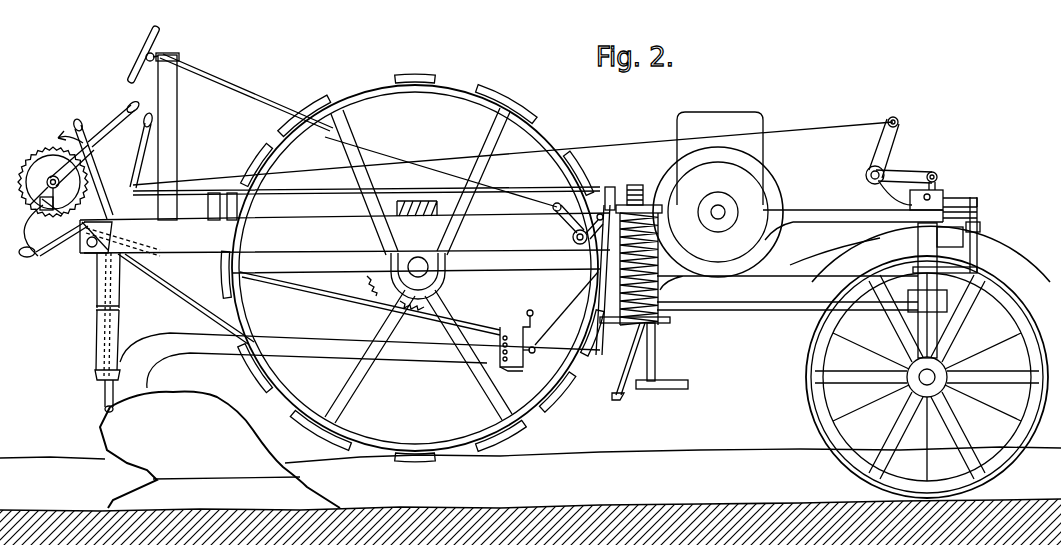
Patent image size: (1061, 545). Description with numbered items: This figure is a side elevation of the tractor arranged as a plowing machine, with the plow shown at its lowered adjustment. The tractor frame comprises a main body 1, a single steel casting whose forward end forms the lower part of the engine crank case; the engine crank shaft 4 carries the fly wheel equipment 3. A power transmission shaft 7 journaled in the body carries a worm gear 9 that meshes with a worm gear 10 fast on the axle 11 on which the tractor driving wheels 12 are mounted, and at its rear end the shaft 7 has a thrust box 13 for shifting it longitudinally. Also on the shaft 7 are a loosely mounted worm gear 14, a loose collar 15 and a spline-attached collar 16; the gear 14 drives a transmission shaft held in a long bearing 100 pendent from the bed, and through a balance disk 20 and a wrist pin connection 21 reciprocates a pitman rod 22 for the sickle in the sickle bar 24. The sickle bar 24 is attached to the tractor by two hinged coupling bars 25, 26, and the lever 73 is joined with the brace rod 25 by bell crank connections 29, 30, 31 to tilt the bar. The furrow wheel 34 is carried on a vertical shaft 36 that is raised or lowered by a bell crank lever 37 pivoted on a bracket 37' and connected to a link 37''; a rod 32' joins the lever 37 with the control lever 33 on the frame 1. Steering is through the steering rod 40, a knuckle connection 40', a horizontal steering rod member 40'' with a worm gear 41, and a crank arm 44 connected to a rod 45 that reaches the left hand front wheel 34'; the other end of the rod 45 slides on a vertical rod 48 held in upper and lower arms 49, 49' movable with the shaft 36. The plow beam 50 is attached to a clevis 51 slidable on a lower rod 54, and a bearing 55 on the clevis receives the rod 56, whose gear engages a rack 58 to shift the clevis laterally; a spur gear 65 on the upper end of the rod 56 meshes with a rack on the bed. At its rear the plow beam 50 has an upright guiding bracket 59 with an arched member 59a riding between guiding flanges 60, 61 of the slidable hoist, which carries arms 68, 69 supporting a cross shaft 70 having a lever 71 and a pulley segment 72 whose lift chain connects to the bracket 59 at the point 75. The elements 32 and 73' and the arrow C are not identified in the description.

The main body 1 is at (863, 197).
The fly wheel equipment 3 is at (718, 212).
The engine crank shaft 4 is at (726, 212).
The power transmission shaft 7 is at (336, 220).
The worm gear 9 is at (430, 220).
The worm gear 10 is at (468, 288).
The axle 11 is at (424, 253).
The tractor driving wheels 12 is at (410, 432).
The thrust box 13 is at (222, 221).
The worm gear 14 is at (644, 196).
The collar 15 is at (634, 190).
The collar 16 is at (610, 190).
The balance disk 20 is at (664, 378).
The crank or wrist pin connection 21 is at (618, 398).
The pitman rod 22 is at (628, 364).
The sickle bar 24 is at (597, 290).
The coupling bar 25 is at (593, 310).
The coupling bar 26 is at (745, 312).
The bell crank connection 29 is at (562, 219).
The bell crank connection 30 is at (573, 240).
The bell crank connection 31 is at (601, 226).
The steering wheel 32 is at (146, 122).
The rod 32' is at (513, 146).
The control lever 33 is at (365, 153).
The furrow wheel 34 is at (914, 377).
The left hand front wheel 34' is at (911, 377).
The vertical shaft 36 is at (918, 245).
The bell crank lever 37 is at (870, 150).
The bracket 37' is at (879, 194).
The link 37'' is at (925, 187).
The steering rod 40 is at (246, 92).
The knuckle connection 40' is at (698, 287).
The horizontal steering rod member 40'' is at (829, 287).
The worm gear 41 is at (944, 289).
The crank arm 44 is at (950, 237).
The rod 45 is at (980, 226).
The vertical rod 48 is at (978, 210).
The upper arm 49 is at (972, 195).
The lower arm 49' is at (959, 263).
The plow beam 50 is at (198, 336).
The clevis 51 is at (512, 370).
The lower rod 54 is at (536, 351).
The bearing 55 is at (513, 335).
The rod 56 is at (370, 303).
The rack 58 is at (530, 305).
The upright guiding bracket 59 is at (200, 296).
The arched-shaped member 59a is at (119, 280).
The guiding flange 60 is at (120, 302).
The guiding flange 61 is at (119, 316).
The spur gear 65 is at (78, 250).
The rearwardly projecting arm 68 is at (42, 199).
The rearwardly projecting arm 69 is at (19, 251).
The cross shaft 70 is at (30, 182).
The lever 71 is at (113, 118).
The pulley segment 72 is at (38, 208).
The lever 73 is at (100, 168).
The rod 73' is at (441, 188).
The point 75 is at (104, 393).
The long bearing 100 is at (656, 355).
The direction arrow C is at (66, 132).